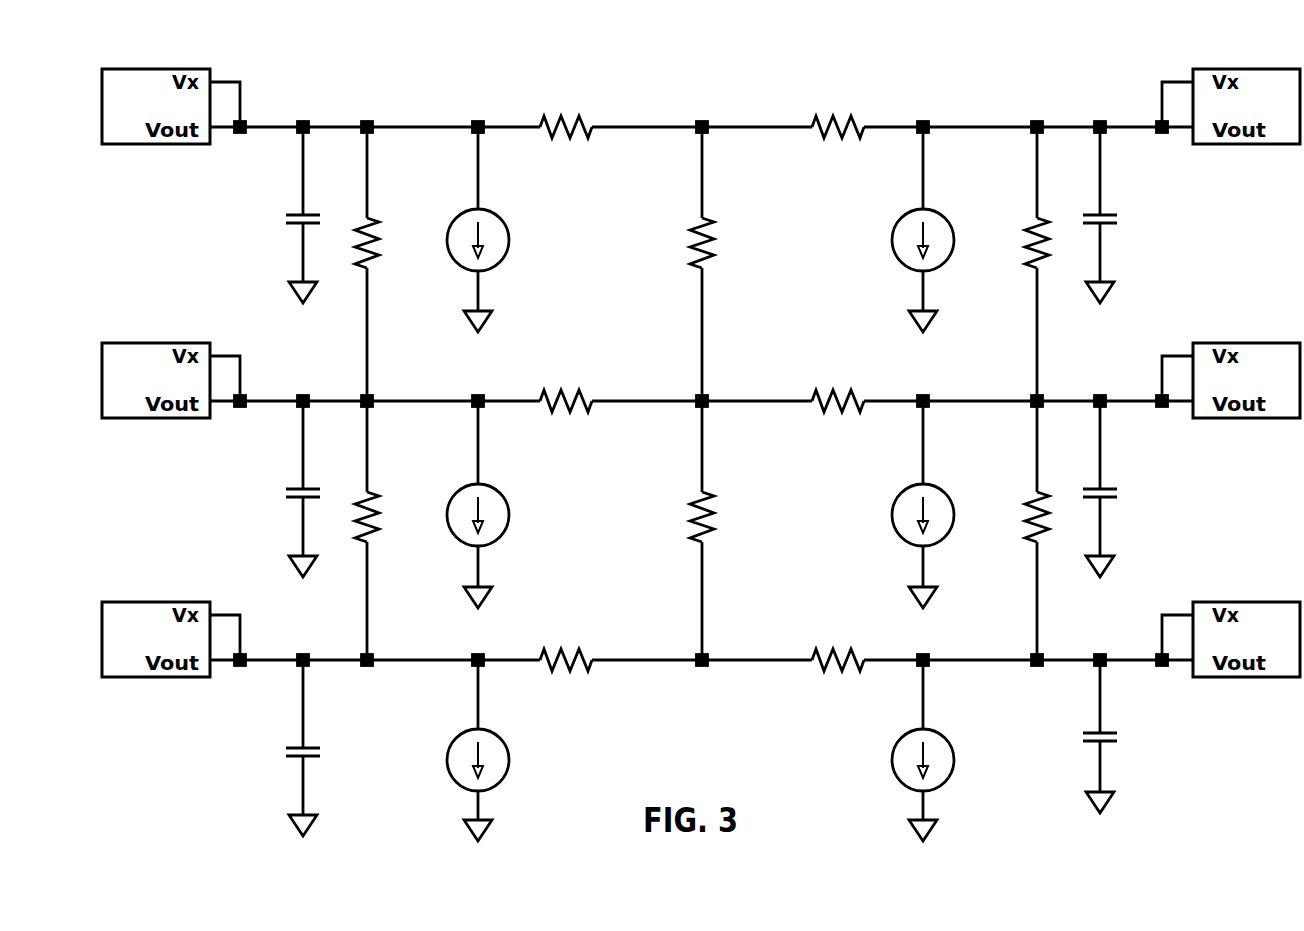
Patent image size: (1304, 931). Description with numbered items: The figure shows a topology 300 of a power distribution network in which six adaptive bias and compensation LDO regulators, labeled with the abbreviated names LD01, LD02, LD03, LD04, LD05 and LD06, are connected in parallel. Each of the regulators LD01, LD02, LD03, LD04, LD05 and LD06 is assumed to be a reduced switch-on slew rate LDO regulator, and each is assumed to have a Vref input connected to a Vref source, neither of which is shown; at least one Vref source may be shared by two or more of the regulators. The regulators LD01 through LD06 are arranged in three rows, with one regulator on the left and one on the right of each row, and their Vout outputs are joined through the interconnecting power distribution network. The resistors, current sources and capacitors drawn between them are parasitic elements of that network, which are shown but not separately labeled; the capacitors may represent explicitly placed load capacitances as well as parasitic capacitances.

The topology 300 is at (701, 423).
The adaptive bias and compensation LDO regulator LD01 is at (171, 121).
The adaptive bias and compensation LDO regulator LD02 is at (1231, 121).
The adaptive bias and compensation LDO regulator LD03 is at (171, 395).
The adaptive bias and compensation LDO regulator LD04 is at (1231, 395).
The adaptive bias and compensation LDO regulator LD05 is at (171, 654).
The adaptive bias and compensation LDO regulator LD06 is at (1231, 654).